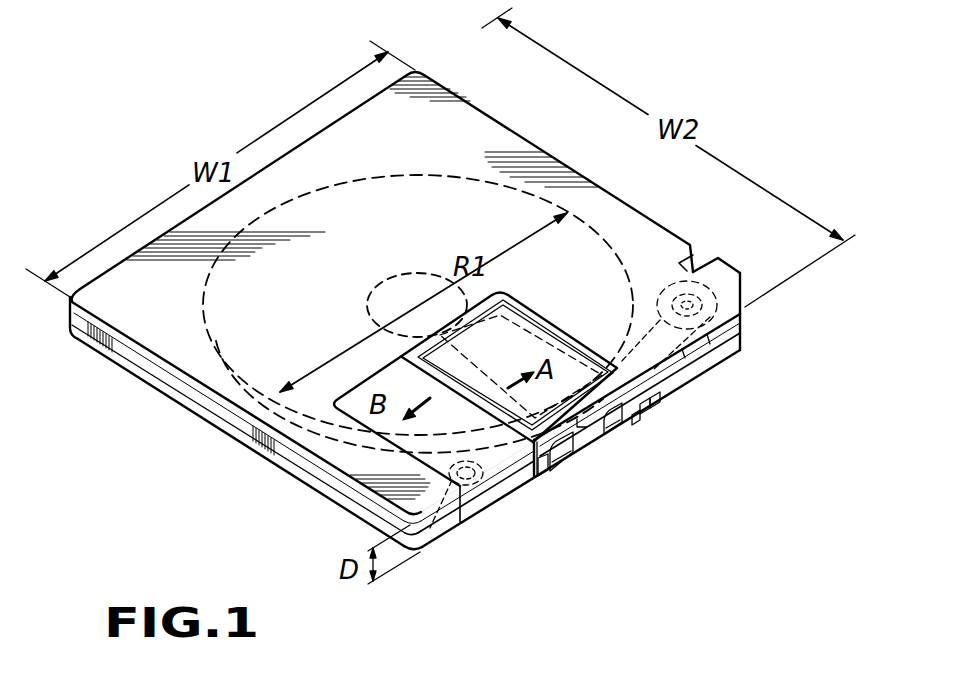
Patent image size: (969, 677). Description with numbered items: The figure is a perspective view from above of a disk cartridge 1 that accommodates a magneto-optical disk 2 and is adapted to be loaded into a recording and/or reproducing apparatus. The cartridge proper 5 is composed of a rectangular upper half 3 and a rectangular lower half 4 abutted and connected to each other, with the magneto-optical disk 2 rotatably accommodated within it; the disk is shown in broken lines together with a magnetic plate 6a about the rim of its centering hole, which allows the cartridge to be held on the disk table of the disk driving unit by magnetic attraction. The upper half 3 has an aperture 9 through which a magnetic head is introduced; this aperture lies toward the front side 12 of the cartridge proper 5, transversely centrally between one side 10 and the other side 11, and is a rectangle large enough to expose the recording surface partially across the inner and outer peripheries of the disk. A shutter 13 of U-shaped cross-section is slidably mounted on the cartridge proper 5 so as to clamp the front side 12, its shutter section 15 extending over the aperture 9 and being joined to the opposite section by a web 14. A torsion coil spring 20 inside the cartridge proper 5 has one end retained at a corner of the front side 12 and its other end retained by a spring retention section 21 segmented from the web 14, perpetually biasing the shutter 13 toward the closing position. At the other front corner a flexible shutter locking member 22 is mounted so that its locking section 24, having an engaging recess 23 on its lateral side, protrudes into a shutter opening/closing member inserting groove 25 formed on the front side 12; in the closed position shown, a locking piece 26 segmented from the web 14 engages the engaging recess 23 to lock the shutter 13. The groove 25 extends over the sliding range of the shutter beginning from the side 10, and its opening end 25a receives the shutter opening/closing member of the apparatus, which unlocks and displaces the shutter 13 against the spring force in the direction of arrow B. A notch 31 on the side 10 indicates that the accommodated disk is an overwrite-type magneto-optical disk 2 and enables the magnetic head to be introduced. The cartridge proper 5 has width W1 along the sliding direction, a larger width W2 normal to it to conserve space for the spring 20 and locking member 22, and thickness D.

The disk cartridge 1 is at (83, 340).
The magneto-optical disk 2 is at (236, 383).
The upper half 3 is at (153, 362).
The lower half 4 is at (170, 388).
The cartridge proper 5 is at (153, 470).
The magnetic plate 6a is at (407, 278).
The aperture 9 is at (535, 315).
The one side 10 is at (663, 222).
The other side 11 is at (322, 487).
The front side 12 is at (450, 548).
The shutter 13 is at (570, 472).
The web 14 is at (630, 440).
The shutter section 15 is at (572, 347).
The torsion coil spring 20 is at (471, 490).
The spring retention section 21 is at (543, 478).
The shutter locking member 22 is at (700, 380).
The engaging recess 23 is at (643, 422).
The locking section 24 is at (648, 425).
The shutter opening/closing member inserting groove 25 is at (708, 356).
The opening end 25a is at (743, 318).
The locking piece 26 is at (642, 432).
The notch 31 is at (699, 257).